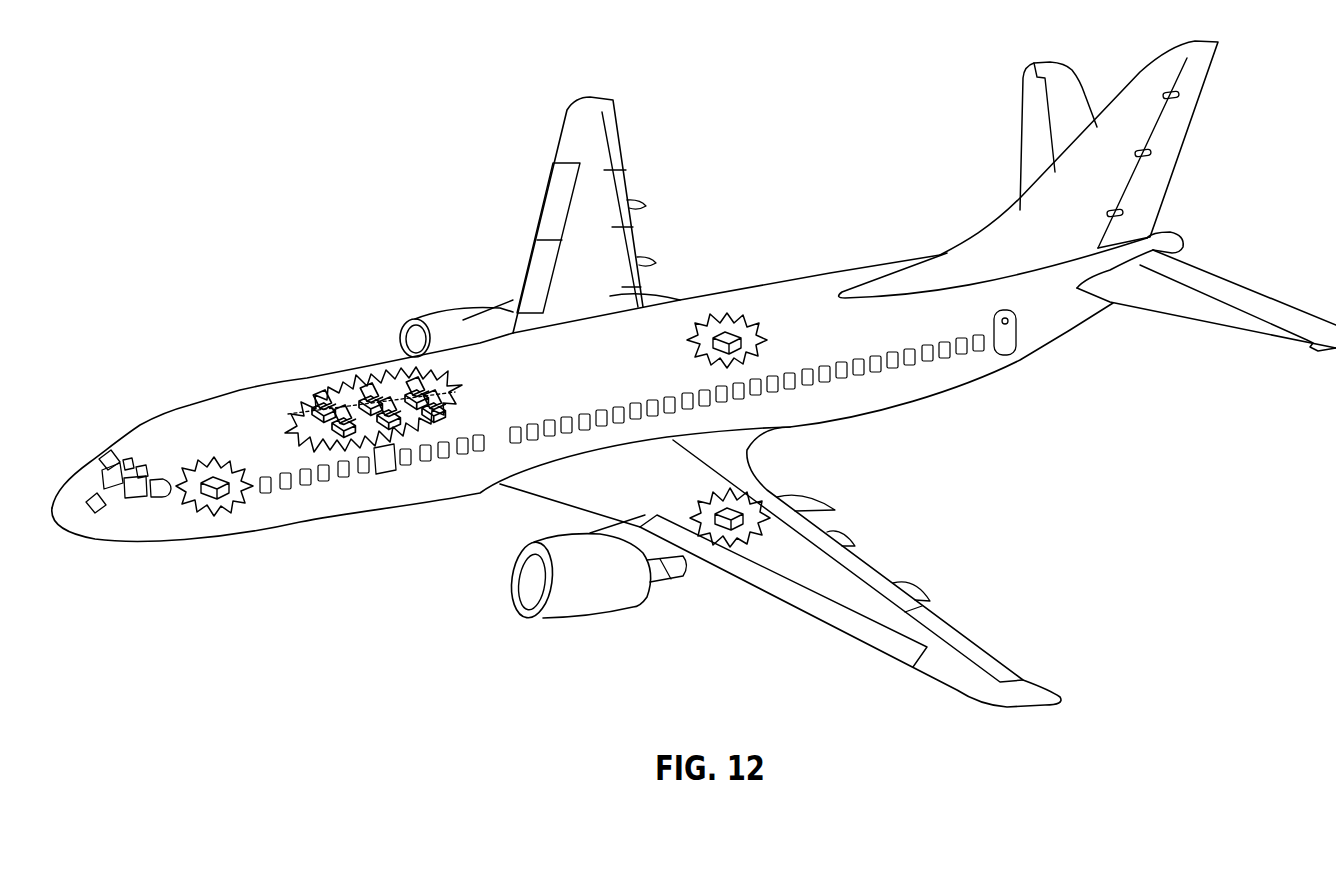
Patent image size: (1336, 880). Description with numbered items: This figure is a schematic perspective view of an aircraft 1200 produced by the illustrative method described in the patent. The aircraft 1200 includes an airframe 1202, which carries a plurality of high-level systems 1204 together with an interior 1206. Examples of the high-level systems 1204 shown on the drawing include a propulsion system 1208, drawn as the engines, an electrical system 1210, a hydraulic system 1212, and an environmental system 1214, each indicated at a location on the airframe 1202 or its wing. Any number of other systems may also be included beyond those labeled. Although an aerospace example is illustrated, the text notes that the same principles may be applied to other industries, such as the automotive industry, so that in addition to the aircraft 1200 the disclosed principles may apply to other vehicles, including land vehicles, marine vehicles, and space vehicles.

The aircraft 1200 is at (270, 203).
The airframe 1202 is at (316, 360).
The high-level systems 1204 is at (823, 212).
The interior 1206 is at (358, 430).
The propulsion system 1208 is at (440, 318).
The electrical system 1210 is at (214, 481).
The hydraulic system 1212 is at (735, 510).
The environmental system 1214 is at (722, 334).